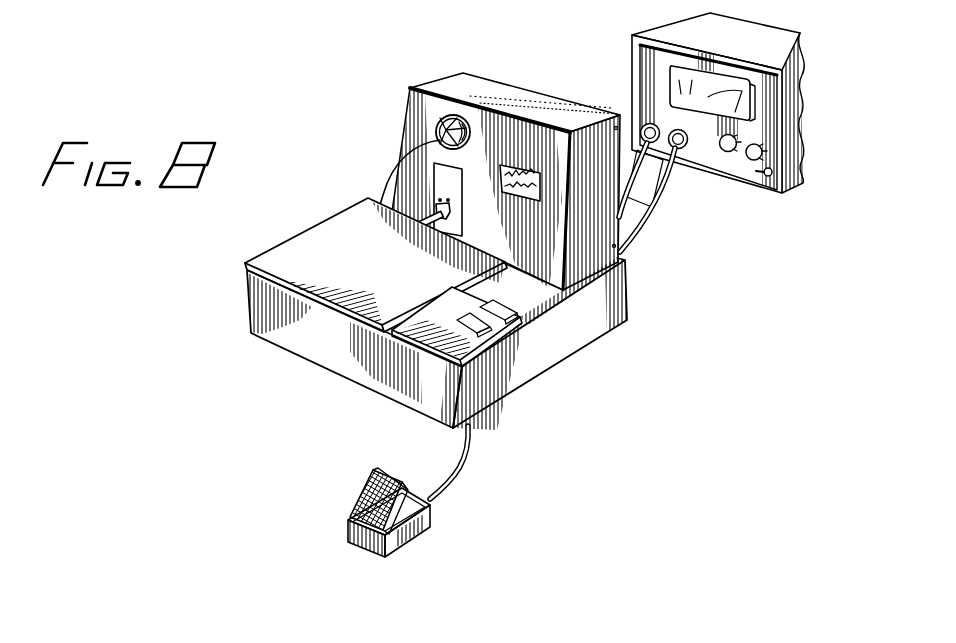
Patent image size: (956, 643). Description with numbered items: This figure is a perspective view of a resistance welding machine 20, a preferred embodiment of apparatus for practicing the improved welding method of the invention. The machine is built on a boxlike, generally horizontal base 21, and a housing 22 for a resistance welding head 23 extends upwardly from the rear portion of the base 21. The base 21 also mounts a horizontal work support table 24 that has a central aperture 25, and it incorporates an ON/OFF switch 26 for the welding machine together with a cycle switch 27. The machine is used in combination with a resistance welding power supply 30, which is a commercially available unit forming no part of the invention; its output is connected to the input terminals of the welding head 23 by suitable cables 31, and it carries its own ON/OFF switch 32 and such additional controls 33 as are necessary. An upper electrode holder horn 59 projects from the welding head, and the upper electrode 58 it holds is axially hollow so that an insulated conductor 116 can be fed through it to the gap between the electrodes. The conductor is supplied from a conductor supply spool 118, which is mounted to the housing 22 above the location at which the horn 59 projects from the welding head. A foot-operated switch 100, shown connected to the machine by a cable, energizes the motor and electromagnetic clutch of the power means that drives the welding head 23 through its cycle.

The resistance welding machine 20 is at (394, 92).
The base 21 is at (596, 338).
The housing 22 is at (530, 100).
The resistance welding head 23 is at (434, 195).
The work support table 24 is at (286, 252).
The central aperture 25 is at (371, 266).
The ON/OFF switch 26 is at (491, 316).
The cycle switch 27 is at (493, 352).
The resistance welding power supply 30 is at (668, 18).
The cables 31 is at (655, 202).
The ON/OFF switch 32 is at (770, 178).
The controls 33 is at (728, 152).
The upper electrode 58 is at (371, 243).
The upper electrode holder horn 59 is at (441, 251).
The foot-operated switch 100 is at (351, 487).
The insulated conductor 116 is at (406, 149).
The conductor supply spool 118 is at (455, 114).